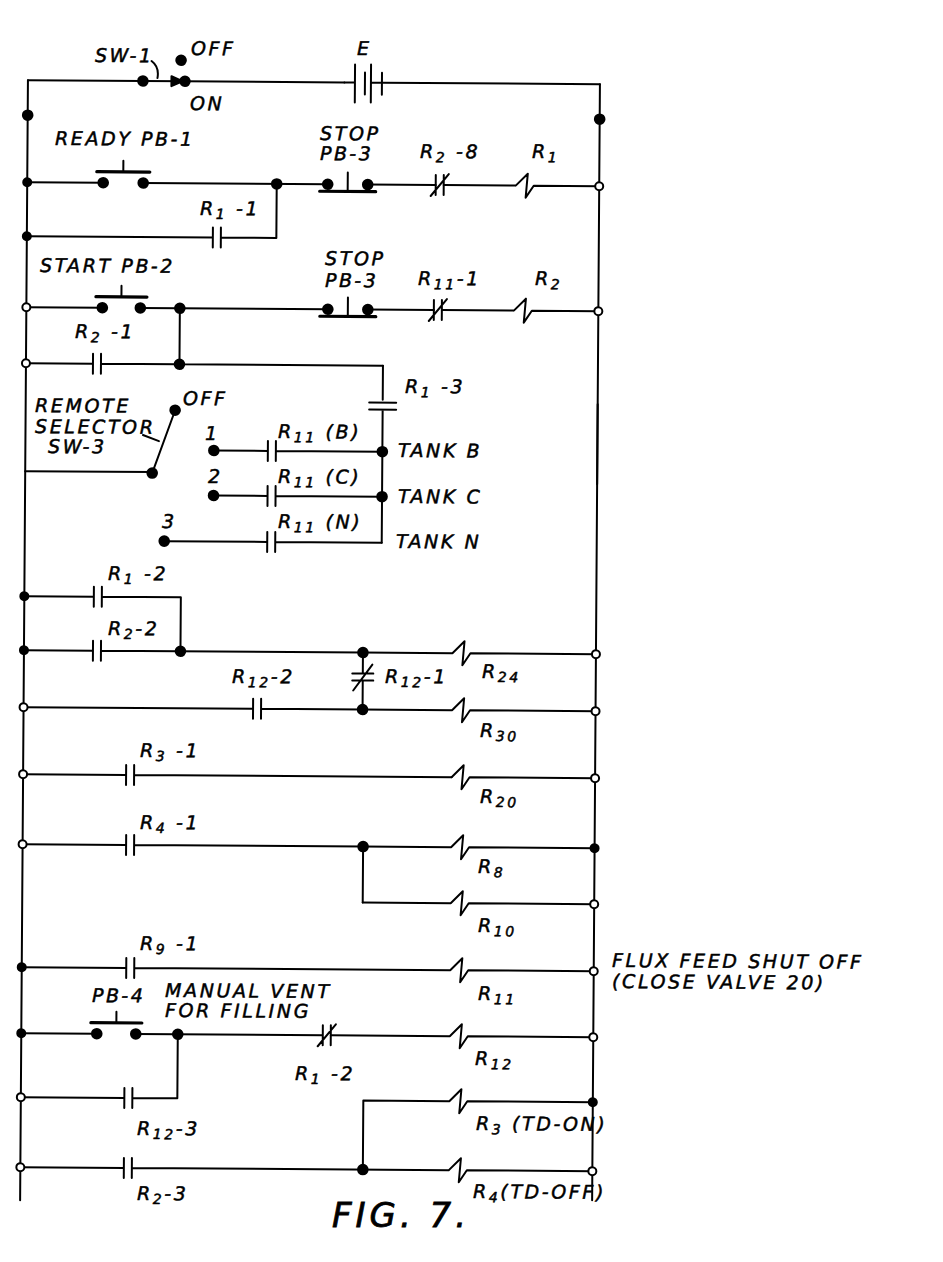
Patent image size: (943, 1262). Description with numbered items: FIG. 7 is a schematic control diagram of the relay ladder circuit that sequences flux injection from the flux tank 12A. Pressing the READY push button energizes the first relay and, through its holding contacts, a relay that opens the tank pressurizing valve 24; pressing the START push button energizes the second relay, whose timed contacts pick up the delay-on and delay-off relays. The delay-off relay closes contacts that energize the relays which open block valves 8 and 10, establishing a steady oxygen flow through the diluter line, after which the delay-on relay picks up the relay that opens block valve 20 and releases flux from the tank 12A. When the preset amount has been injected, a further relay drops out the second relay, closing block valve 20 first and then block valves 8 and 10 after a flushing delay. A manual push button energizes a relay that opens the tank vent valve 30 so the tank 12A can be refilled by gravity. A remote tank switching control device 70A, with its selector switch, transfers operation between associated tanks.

The remote tank switching control device 70A is at (295, 550).
The flux tank 12A is at (605, 436).
The tank pressurizing valve 24 is at (610, 844).
The tank vent valve 30 is at (587, 710).
The block valve 20 is at (631, 777).
The block valve 8 is at (584, 845).
The block valve 10 is at (580, 902).